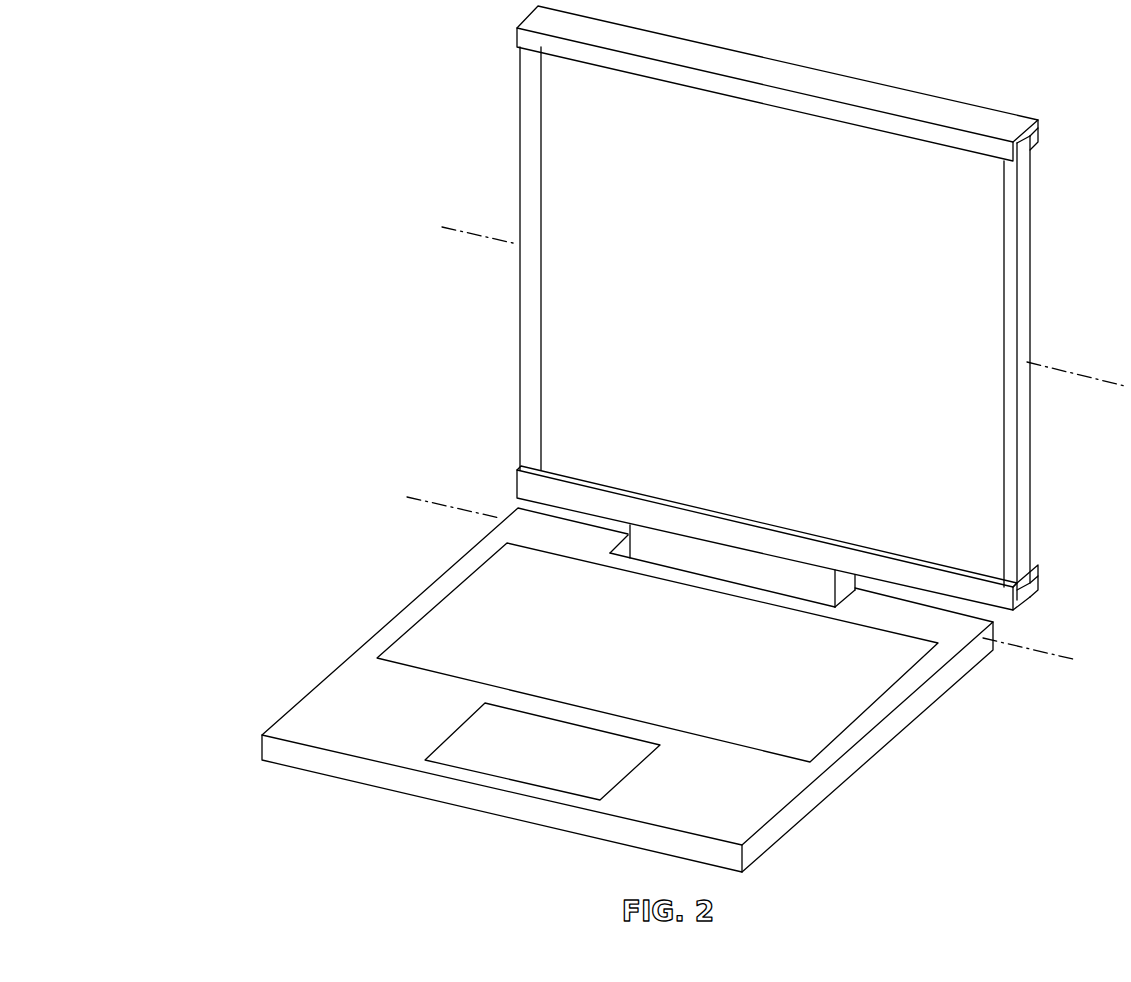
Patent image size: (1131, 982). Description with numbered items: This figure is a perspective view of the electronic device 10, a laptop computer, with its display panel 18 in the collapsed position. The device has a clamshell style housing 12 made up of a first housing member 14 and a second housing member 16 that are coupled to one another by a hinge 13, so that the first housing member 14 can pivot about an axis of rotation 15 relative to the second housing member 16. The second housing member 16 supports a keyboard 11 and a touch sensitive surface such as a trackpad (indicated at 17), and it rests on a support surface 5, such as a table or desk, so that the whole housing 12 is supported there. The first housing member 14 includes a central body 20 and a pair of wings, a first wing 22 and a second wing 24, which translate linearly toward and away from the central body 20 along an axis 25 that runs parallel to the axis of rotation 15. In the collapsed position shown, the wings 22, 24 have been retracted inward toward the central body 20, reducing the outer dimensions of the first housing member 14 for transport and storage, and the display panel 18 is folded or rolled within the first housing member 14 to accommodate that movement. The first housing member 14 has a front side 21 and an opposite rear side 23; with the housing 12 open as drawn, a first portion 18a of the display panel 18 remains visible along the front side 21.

The electronic device 10 is at (648, 439).
The housing 12 is at (338, 552).
The keyboard 11 is at (470, 567).
The second housing member 16 is at (248, 752).
The touchpad 17 is at (466, 773).
The hinge 13 is at (857, 608).
The support surface 5 is at (977, 847).
The axis of rotation 15 is at (1047, 657).
The first housing member 14 is at (1050, 110).
The rear side 23 is at (988, 88).
The central body 20 is at (808, 81).
The first wing 22 is at (519, 82).
The front side 21 is at (558, 139).
The second wing 24 is at (1030, 191).
The display panel 18 is at (990, 266).
The first portion 18a is at (990, 447).
The axis 25 is at (1088, 374).